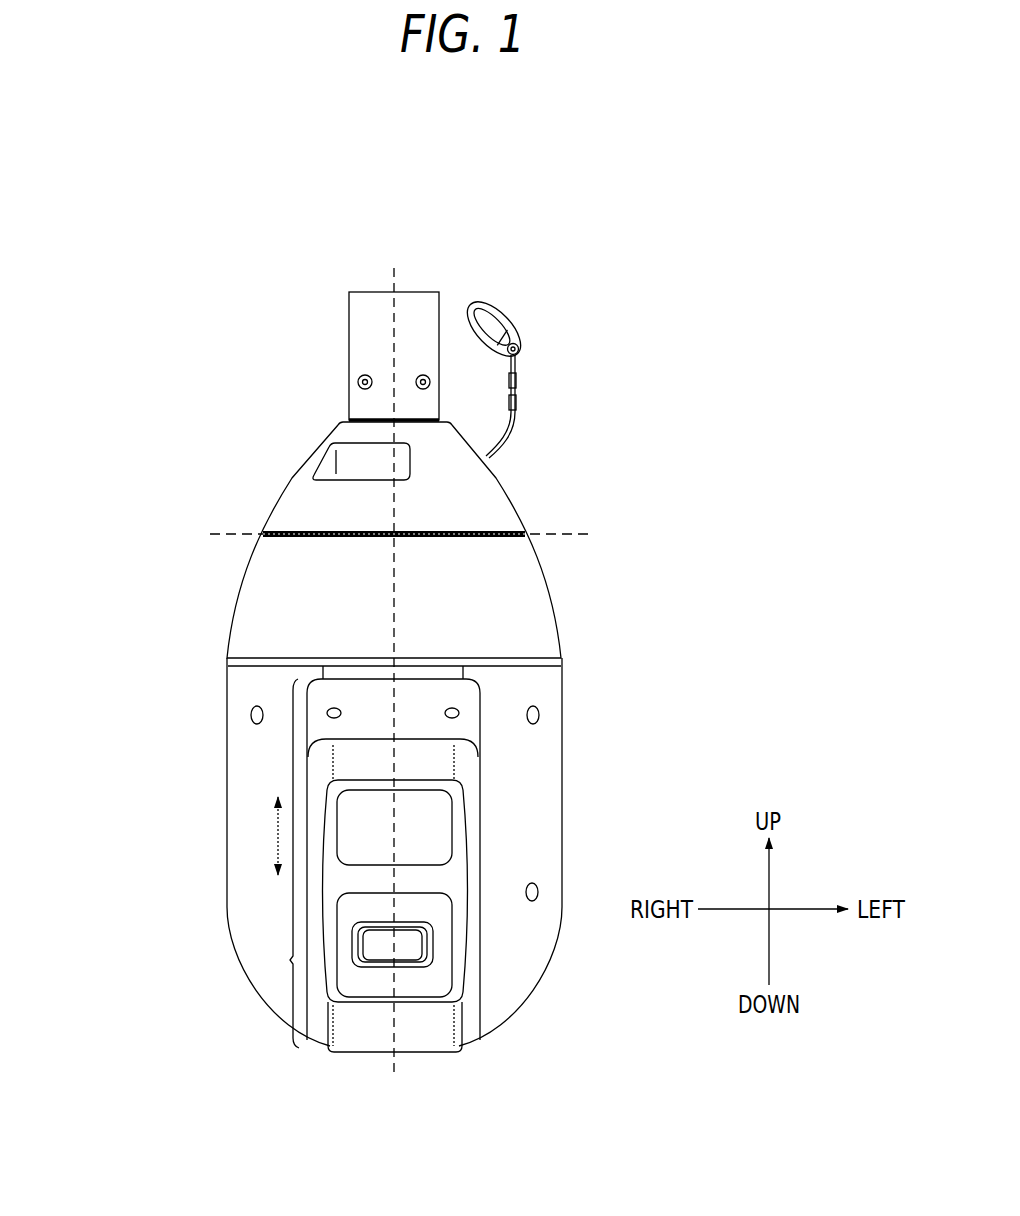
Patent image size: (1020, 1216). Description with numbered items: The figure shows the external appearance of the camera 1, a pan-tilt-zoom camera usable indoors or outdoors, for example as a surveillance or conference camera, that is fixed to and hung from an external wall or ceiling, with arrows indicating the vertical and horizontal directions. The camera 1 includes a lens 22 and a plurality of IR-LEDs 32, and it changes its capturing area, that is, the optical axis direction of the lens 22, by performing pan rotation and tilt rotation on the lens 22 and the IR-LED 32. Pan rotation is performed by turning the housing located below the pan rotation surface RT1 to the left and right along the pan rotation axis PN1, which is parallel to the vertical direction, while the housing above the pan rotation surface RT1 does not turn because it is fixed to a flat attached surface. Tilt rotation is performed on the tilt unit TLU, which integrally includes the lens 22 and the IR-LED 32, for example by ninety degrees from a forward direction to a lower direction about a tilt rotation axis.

The camera 1 is at (562, 291).
The pan rotation axis PN1 is at (403, 275).
The pan rotation surface RT1 is at (583, 531).
The tilt unit TLU is at (282, 961).
The IR-LED 32 is at (437, 847).
The lens 22 is at (405, 947).